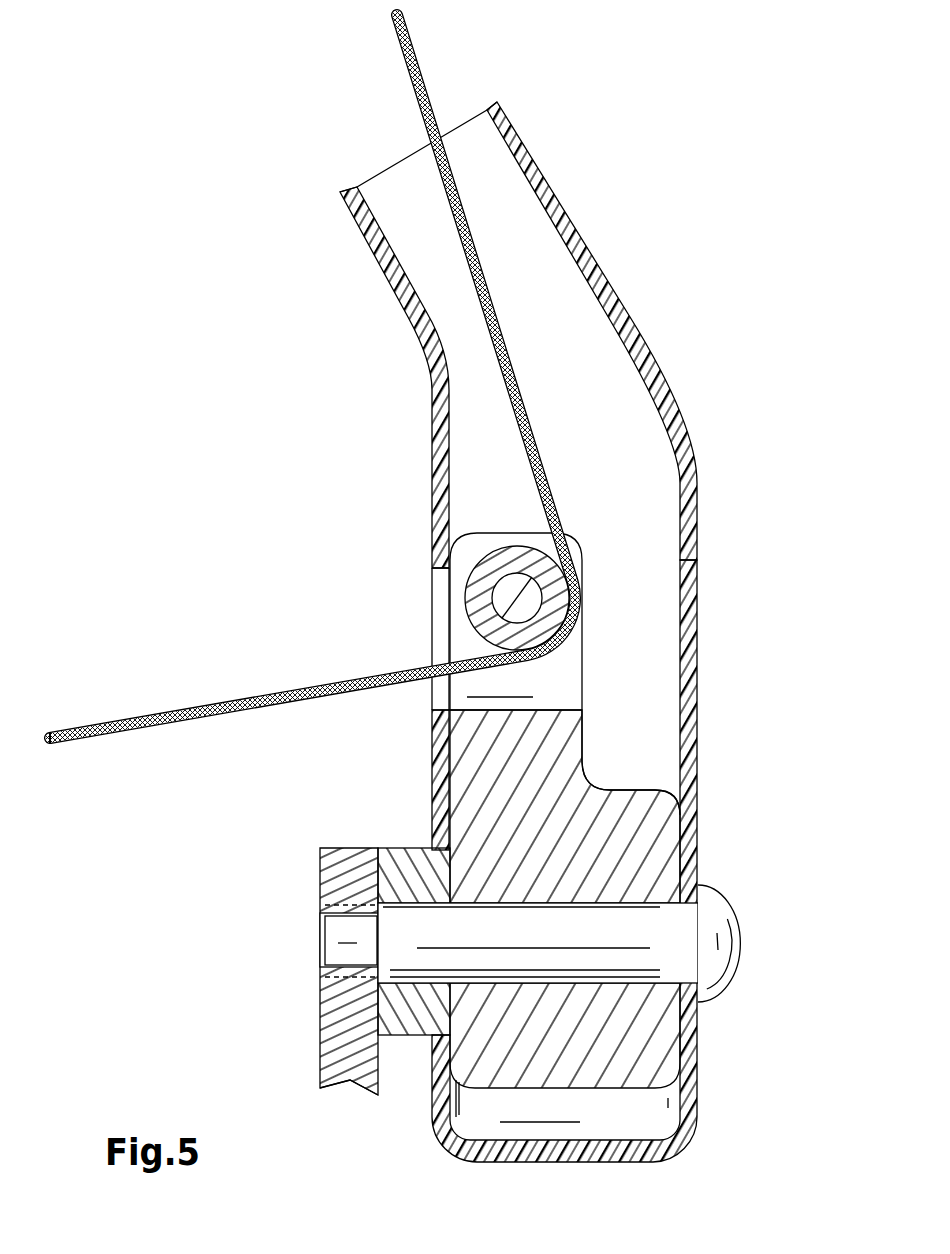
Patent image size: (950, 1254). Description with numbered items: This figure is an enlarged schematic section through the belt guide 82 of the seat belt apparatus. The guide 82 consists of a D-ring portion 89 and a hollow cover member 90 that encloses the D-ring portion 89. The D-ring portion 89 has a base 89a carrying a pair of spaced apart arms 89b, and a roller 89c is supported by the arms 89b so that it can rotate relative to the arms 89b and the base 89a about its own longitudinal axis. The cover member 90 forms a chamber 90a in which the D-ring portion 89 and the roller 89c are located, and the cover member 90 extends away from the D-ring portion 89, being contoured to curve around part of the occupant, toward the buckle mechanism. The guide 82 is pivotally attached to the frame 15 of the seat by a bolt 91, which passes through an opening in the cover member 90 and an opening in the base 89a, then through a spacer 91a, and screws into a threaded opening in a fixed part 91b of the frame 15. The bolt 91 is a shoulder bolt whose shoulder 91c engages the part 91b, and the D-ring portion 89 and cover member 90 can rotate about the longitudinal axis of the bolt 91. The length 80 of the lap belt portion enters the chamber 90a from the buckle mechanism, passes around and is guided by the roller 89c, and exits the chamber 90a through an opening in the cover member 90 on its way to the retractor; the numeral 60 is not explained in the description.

The frame 15 is at (315, 1078).
The strip/web 60 is at (137, 682).
The length of lap belt portion 80 is at (490, 312).
The guide 82 is at (698, 562).
The D-ring portion 89 is at (647, 857).
The base 89a is at (638, 1048).
The arms 89b is at (557, 675).
The roller 89c is at (473, 600).
The cover member 90 is at (693, 453).
The chamber 90a is at (418, 253).
The bolt 91 is at (720, 940).
The spacer 91a is at (410, 873).
The fixed part 91b is at (345, 1045).
The shoulder 91c is at (377, 903).